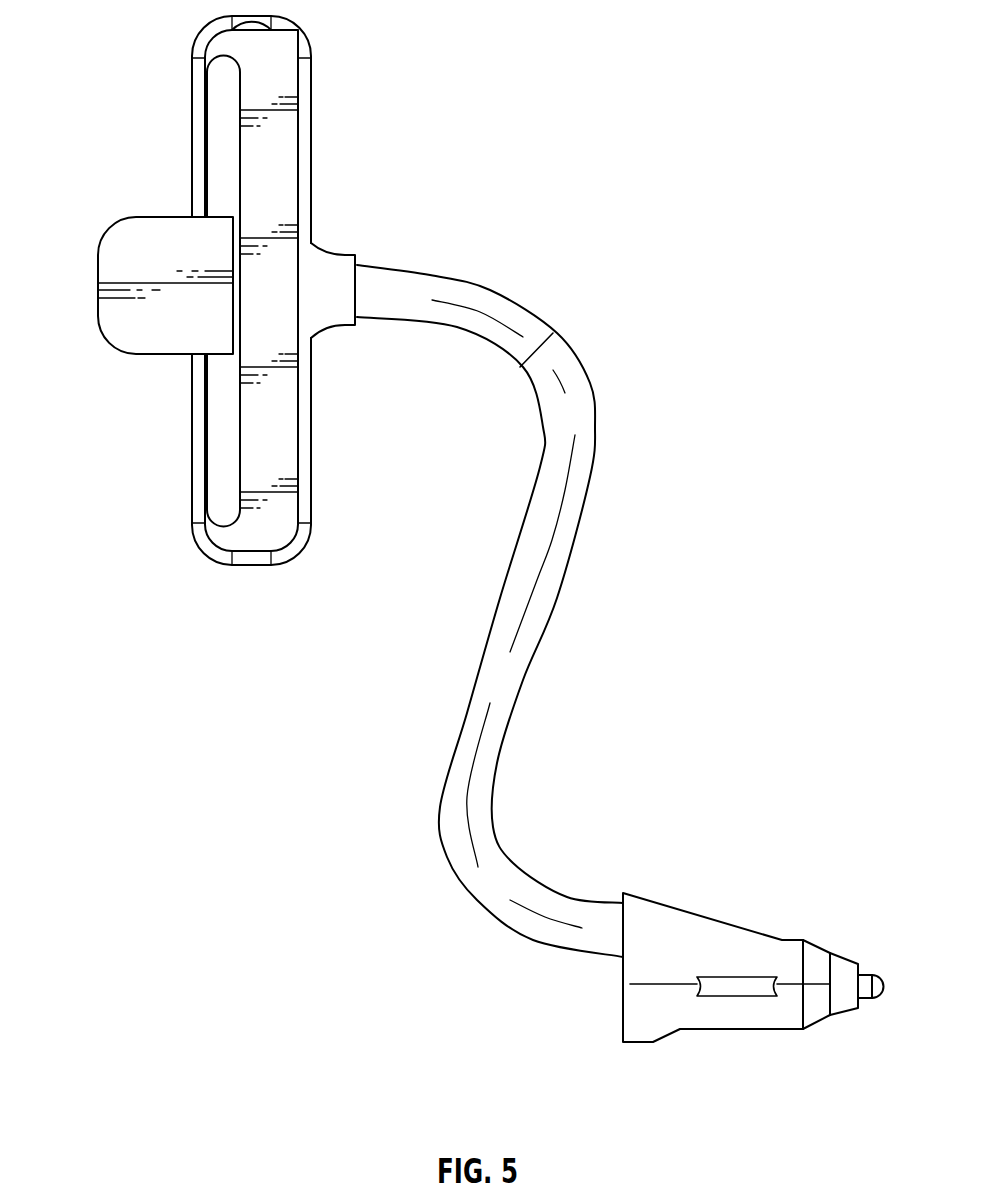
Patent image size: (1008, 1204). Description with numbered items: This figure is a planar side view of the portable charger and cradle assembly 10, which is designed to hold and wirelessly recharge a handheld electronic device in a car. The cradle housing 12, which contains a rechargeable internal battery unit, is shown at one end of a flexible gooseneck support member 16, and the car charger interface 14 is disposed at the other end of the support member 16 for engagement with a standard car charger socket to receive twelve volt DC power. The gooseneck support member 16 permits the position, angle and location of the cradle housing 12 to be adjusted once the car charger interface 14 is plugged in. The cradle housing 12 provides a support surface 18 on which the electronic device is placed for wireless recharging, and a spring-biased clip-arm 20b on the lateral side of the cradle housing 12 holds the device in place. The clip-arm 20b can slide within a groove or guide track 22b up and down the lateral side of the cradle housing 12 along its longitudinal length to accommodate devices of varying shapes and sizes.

The charger and cradle assembly 10 is at (537, 175).
The cradle housing 12 is at (262, 538).
The car charger interface 14 is at (727, 947).
The flexible gooseneck support member 16 is at (557, 553).
The support surface 18 is at (189, 483).
The clip-arm 20b is at (120, 237).
The guide track 22b is at (228, 100).